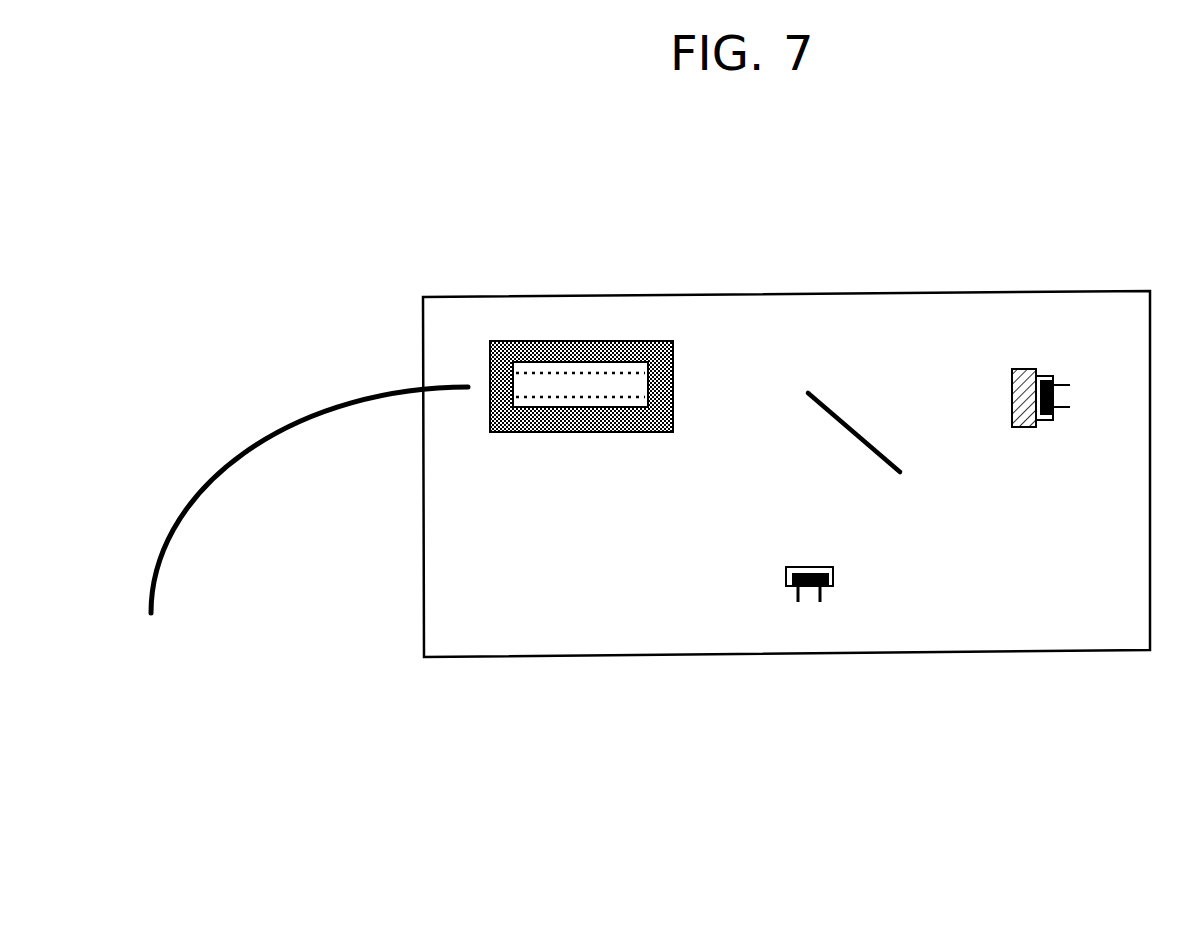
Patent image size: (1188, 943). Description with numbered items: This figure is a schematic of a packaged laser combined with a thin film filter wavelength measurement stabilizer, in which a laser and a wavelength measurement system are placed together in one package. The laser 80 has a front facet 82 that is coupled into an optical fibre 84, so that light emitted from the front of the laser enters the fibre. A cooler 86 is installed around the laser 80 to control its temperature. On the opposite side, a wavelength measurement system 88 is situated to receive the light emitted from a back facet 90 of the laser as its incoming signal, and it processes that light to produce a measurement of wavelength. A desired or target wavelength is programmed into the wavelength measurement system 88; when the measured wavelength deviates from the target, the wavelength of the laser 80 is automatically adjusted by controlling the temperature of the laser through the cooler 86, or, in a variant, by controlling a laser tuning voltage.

The laser 80 is at (586, 387).
The front facet 82 is at (490, 356).
The optical fibre 84 is at (317, 412).
The cooler 86 is at (633, 430).
The wavelength measurement system 88 is at (948, 516).
The back facet 90 is at (660, 343).